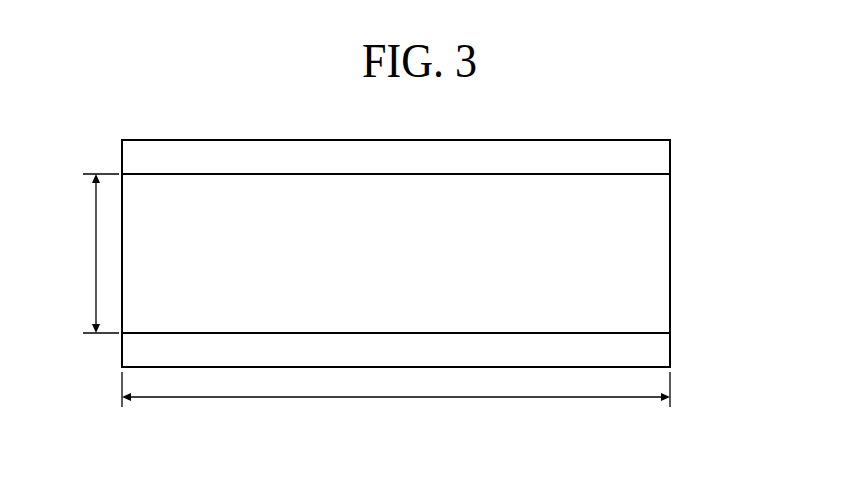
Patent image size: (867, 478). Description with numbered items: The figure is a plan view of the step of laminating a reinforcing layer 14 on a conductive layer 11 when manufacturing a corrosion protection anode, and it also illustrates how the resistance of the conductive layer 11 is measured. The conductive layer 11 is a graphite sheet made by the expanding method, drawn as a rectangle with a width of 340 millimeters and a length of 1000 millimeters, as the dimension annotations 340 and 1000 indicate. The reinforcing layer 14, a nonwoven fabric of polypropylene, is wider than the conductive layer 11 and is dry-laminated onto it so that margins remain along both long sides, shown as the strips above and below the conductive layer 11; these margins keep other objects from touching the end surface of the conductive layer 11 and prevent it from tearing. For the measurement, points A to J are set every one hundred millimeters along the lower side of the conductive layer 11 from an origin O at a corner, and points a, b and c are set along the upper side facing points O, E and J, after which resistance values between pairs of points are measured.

The conductive layer 11 is at (660, 258).
The reinforcing layer 14 is at (660, 159).
The plate width dimension (340 mm) 340 is at (74, 253).
The plate length dimension (1000 mm) 1000 is at (396, 401).